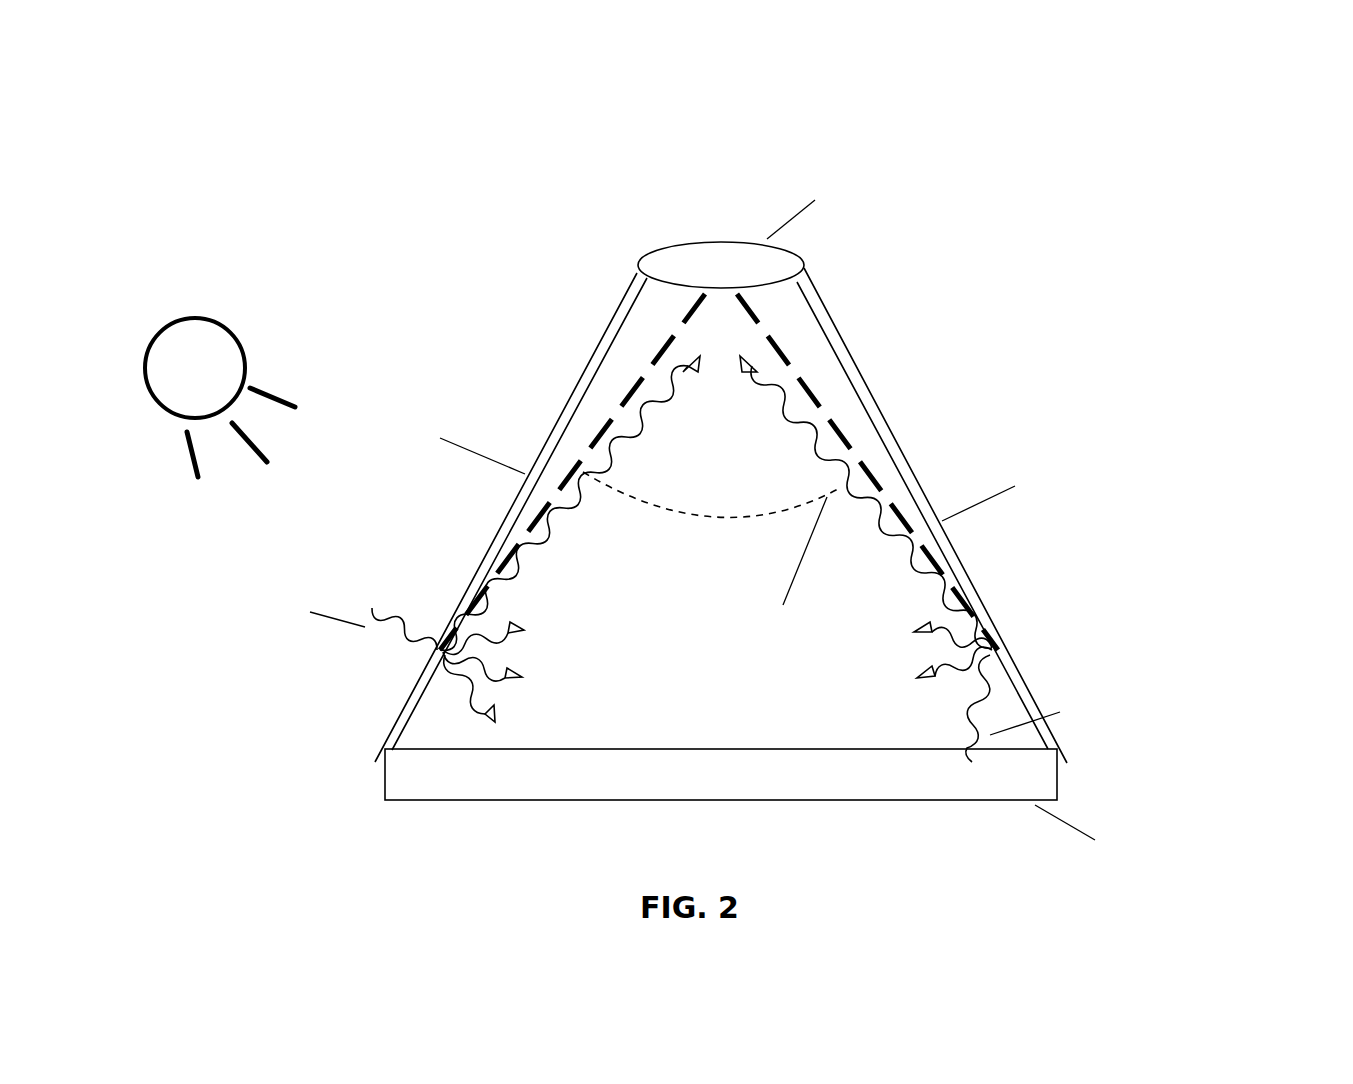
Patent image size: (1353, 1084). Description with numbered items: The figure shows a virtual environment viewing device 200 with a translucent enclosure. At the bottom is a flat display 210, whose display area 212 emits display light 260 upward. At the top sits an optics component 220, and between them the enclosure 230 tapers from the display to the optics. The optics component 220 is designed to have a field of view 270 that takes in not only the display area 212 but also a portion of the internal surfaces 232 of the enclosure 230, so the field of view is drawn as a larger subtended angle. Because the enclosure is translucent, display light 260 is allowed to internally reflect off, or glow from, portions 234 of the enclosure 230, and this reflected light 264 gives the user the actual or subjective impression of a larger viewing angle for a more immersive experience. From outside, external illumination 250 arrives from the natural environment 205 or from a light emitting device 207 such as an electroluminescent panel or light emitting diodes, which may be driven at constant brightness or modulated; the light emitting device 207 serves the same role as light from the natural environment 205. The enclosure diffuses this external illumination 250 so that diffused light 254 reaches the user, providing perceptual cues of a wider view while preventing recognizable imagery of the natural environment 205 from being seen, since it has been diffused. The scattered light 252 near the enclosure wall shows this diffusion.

The virtual environment viewing device 200 is at (983, 140).
The natural environment 205 is at (340, 513).
The light emitting device 207 is at (220, 397).
The display 210 is at (970, 792).
The display area 212 is at (670, 746).
The optics component 220 is at (741, 246).
The enclosure 230 is at (879, 385).
The internal surfaces 232 is at (407, 731).
The portions of the enclosure 234 is at (992, 672).
The external illumination 250 is at (398, 644).
The scattered environment light 252 is at (515, 655).
The diffused light 254 is at (605, 472).
The display light 260 is at (962, 740).
The reflected light 264 is at (884, 548).
The field of view 270 is at (642, 506).